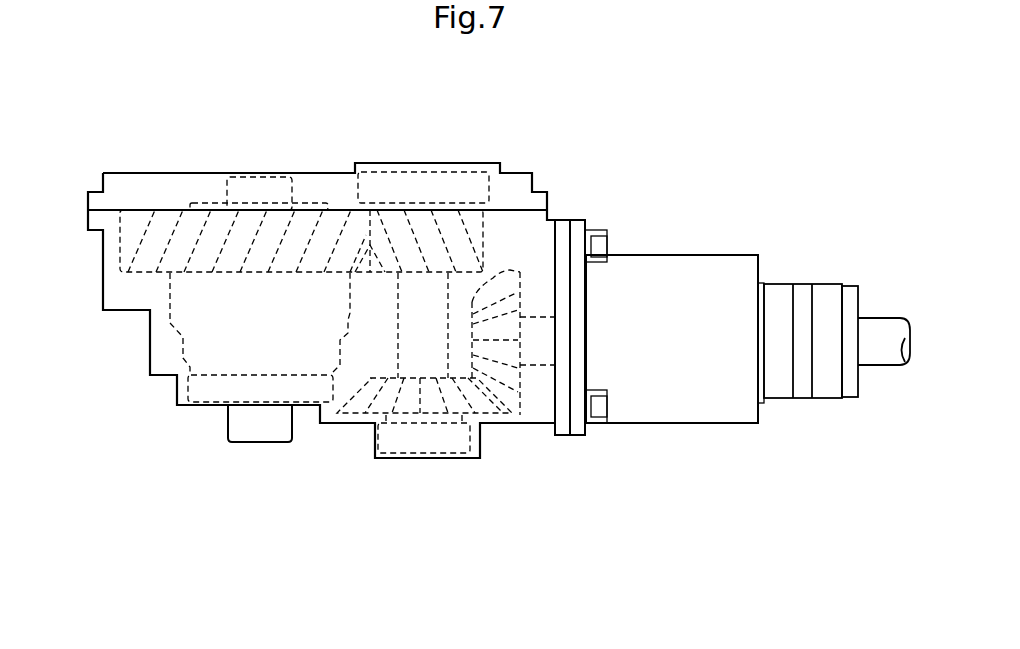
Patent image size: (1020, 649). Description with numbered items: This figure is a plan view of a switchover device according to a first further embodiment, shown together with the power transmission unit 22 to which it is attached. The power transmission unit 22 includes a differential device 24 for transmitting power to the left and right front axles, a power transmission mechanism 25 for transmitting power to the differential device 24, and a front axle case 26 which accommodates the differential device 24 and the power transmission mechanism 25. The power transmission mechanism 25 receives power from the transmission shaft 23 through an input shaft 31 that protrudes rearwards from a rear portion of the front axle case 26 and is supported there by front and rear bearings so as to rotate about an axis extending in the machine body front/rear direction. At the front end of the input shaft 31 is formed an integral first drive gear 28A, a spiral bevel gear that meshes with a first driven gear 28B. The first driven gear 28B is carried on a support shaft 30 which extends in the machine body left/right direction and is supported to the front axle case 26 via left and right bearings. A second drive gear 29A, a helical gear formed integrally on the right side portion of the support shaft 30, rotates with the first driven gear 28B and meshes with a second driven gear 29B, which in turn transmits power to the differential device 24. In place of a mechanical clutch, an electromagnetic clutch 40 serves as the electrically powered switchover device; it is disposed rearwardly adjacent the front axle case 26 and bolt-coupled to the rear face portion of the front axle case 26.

The power transmission unit 22 is at (128, 128).
The transmission shaft 23 is at (882, 358).
The differential device 24 is at (170, 325).
The power transmission mechanism 25 is at (507, 256).
The front axle case 26 is at (103, 293).
The first drive gear 28A is at (520, 272).
The first driven gear 28B is at (425, 410).
The second drive gear 29A is at (418, 222).
The second driven gear 29B is at (172, 228).
The support shaft 30 is at (398, 320).
The input shaft 31 is at (538, 365).
The electromagnetic clutch 40 is at (667, 425).